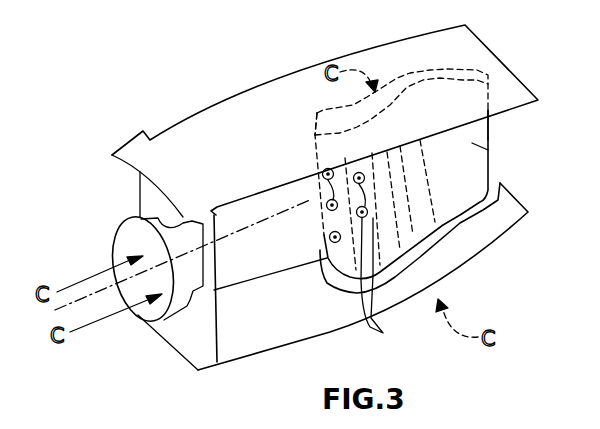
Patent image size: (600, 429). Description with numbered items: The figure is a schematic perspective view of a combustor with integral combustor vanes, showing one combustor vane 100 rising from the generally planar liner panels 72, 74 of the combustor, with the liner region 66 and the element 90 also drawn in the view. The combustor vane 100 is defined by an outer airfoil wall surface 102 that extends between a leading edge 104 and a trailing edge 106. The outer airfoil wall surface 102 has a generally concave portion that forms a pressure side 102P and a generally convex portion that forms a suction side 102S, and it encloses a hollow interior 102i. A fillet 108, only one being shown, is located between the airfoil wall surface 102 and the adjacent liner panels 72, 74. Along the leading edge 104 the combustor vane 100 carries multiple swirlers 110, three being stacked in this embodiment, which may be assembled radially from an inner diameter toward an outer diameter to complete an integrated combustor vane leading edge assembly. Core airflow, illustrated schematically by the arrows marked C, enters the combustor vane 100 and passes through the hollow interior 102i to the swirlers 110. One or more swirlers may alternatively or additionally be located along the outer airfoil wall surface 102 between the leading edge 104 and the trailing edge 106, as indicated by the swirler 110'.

The duct 90 is at (141, 221).
The liner panel 72 is at (232, 166).
The intermediate panel 66 is at (267, 221).
The liner panel 74 is at (285, 312).
The leading edge 104 is at (323, 176).
The swirler 110 is at (318, 225).
The swirler 110' is at (395, 283).
The suction side 102S is at (393, 78).
The hollow interior 102i is at (398, 73).
The pressure side 102P is at (420, 84).
The trailing edge 106 is at (492, 134).
The combustor vane 100 is at (488, 147).
The outer airfoil wall surface 102 is at (473, 173).
The fillet 108 is at (437, 233).